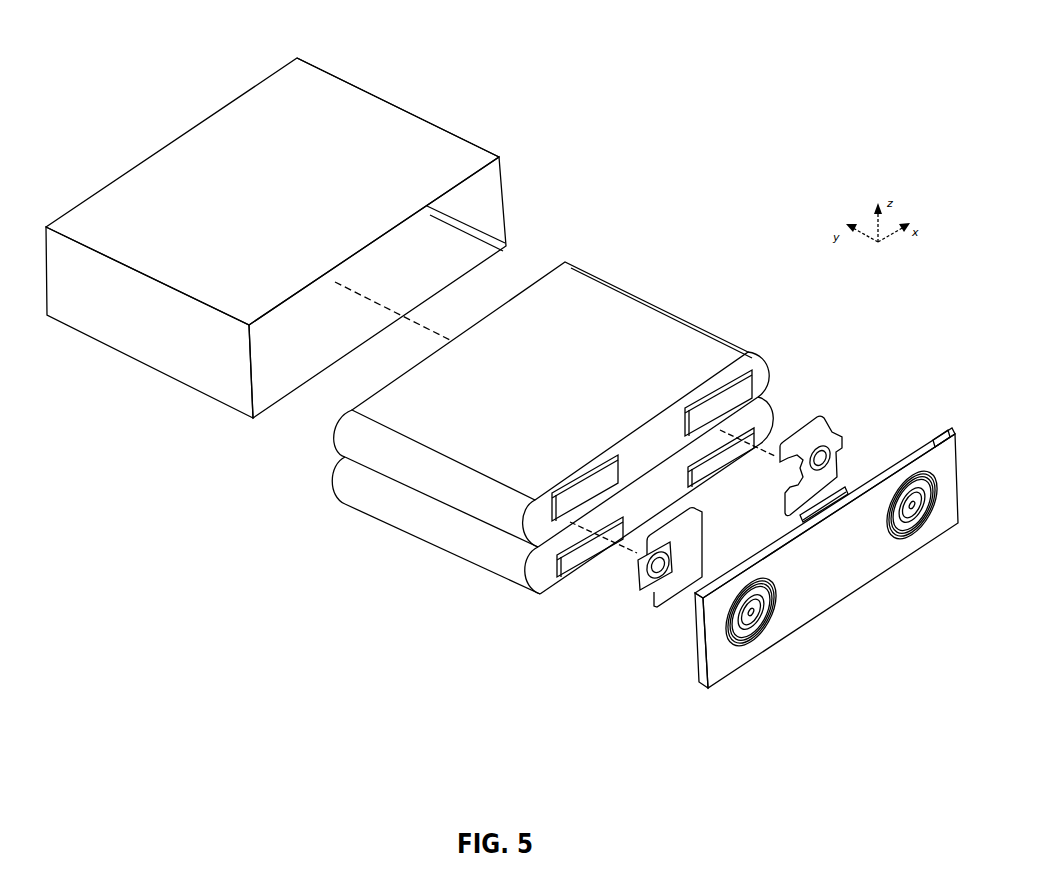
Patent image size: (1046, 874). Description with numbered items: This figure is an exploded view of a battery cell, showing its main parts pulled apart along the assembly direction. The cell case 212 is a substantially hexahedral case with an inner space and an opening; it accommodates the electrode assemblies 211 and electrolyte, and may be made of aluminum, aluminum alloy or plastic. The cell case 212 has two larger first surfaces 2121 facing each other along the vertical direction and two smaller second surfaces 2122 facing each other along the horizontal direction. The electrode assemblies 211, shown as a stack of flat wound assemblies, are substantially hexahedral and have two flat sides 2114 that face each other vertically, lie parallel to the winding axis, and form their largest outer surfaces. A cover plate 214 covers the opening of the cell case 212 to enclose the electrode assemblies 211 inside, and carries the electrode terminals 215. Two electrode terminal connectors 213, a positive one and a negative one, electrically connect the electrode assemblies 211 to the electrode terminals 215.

The electrode assemblies 211 is at (693, 304).
The flat sides 2114 is at (587, 312).
The cell case 212 is at (421, 106).
The first surfaces 2121 is at (338, 109).
The second surfaces 2122 is at (140, 334).
The electrode terminal connectors 213 is at (820, 427).
The cover plate 214 is at (922, 460).
The electrode terminals 215 is at (923, 532).